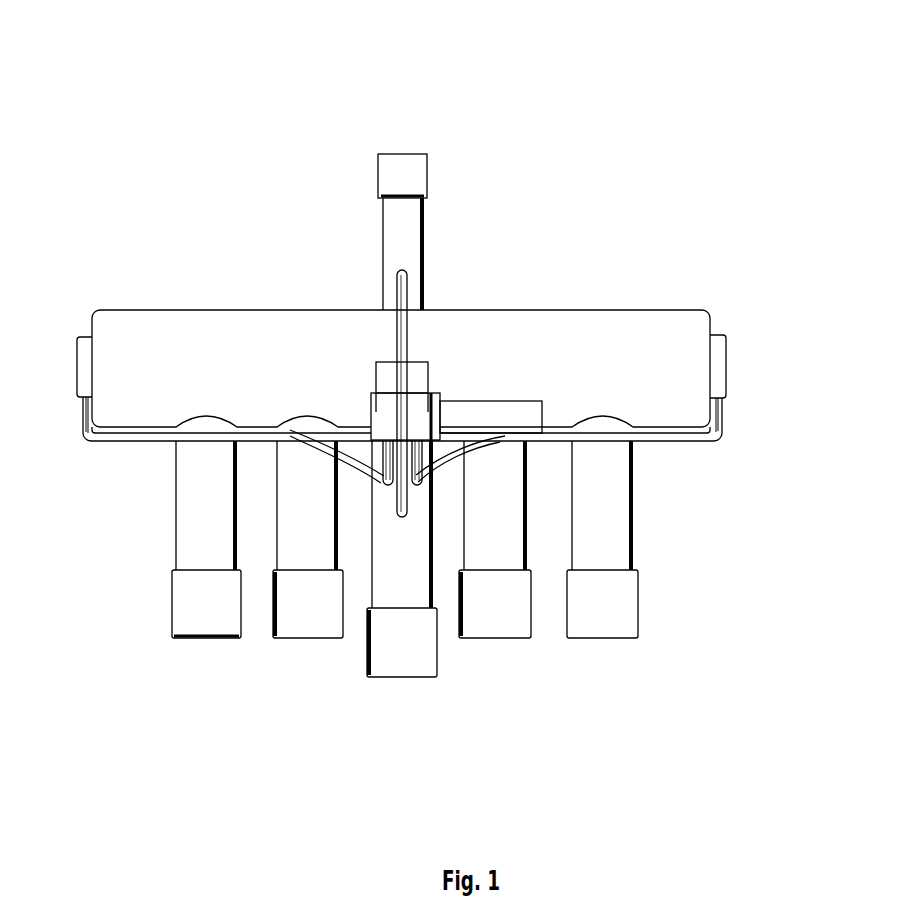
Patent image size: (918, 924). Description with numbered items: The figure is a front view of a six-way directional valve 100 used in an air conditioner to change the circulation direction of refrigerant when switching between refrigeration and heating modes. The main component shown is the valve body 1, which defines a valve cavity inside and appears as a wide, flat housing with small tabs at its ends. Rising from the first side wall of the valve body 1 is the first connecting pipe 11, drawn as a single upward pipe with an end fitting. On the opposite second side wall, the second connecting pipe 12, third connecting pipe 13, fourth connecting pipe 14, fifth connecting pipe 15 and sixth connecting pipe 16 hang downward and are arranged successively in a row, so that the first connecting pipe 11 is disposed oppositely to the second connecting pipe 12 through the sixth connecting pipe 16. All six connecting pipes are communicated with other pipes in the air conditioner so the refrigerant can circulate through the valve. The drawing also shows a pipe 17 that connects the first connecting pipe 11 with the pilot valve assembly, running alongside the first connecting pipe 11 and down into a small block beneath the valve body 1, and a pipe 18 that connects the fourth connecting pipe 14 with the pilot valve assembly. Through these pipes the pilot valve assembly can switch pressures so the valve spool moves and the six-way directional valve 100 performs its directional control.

The six-way directional valve 100 is at (475, 72).
The valve body 1 is at (110, 308).
The first connecting pipe 11 is at (412, 283).
The second connecting pipe 12 is at (223, 605).
The third connecting pipe 13 is at (318, 605).
The fourth connecting pipe 14 is at (410, 630).
The fifth connecting pipe 15 is at (510, 602).
The sixth connecting pipe 16 is at (610, 607).
The pipe 17 is at (402, 337).
The pipe 18 is at (407, 507).